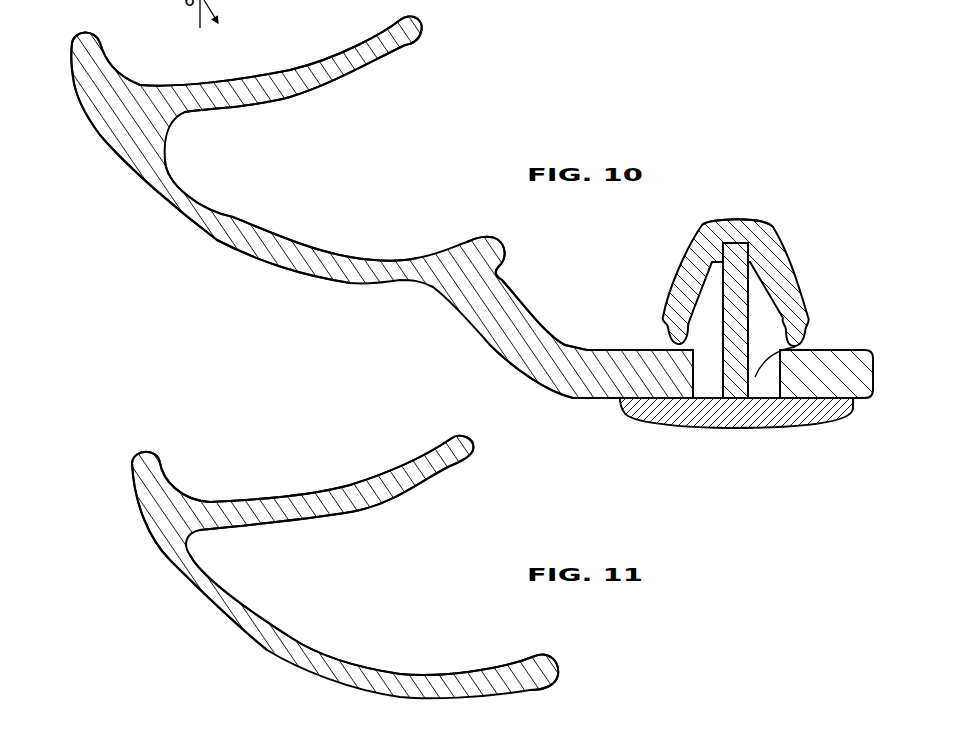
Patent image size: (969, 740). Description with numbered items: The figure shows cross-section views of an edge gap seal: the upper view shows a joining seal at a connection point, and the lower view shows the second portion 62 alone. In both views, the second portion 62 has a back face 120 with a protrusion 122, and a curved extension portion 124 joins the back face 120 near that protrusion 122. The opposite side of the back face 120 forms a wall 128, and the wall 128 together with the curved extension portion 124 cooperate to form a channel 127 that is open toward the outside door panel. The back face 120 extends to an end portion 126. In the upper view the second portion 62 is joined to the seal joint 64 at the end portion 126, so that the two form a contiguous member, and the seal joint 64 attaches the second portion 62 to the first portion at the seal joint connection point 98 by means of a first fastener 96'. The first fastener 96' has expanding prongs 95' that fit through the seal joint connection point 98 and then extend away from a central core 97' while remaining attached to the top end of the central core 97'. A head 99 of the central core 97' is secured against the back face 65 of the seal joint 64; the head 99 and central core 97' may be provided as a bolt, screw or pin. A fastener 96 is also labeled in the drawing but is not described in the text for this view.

In FIG. 10, the second portion 62 is at (397, 280).
In FIG. 11, the second portion 62 is at (208, 502).
In FIG. 10, the seal joint 64 is at (548, 335).
In FIG. 10, the back face of the seal joint 65 is at (600, 400).
In FIG. 10, the expanding prongs 95' is at (729, 282).
In FIG. 10, the first fastener 96' is at (753, 197).
In FIG. 10, the central core 97' is at (719, 320).
In FIG. 10, the seal joint connection point 98 is at (802, 346).
In FIG. 10, the head 99 is at (742, 428).
In FIG. 10, the fastener 96 is at (49, 12).
In FIG. 10, the back face 120 is at (212, 238).
In FIG. 11, the back face 120 is at (203, 600).
In FIG. 10, the protrusion 122 is at (72, 64).
In FIG. 11, the protrusion 122 is at (132, 477).
In FIG. 10, the curved extension portion 124 is at (405, 40).
In FIG. 11, the curved extension portion 124 is at (467, 455).
In FIG. 10, the end portion 126 is at (477, 245).
In FIG. 11, the end portion 126 is at (547, 667).
In FIG. 10, the channel 127 is at (249, 172).
In FIG. 11, the channel 127 is at (381, 596).
In FIG. 10, the wall 128 is at (280, 240).
In FIG. 11, the wall 128 is at (298, 636).